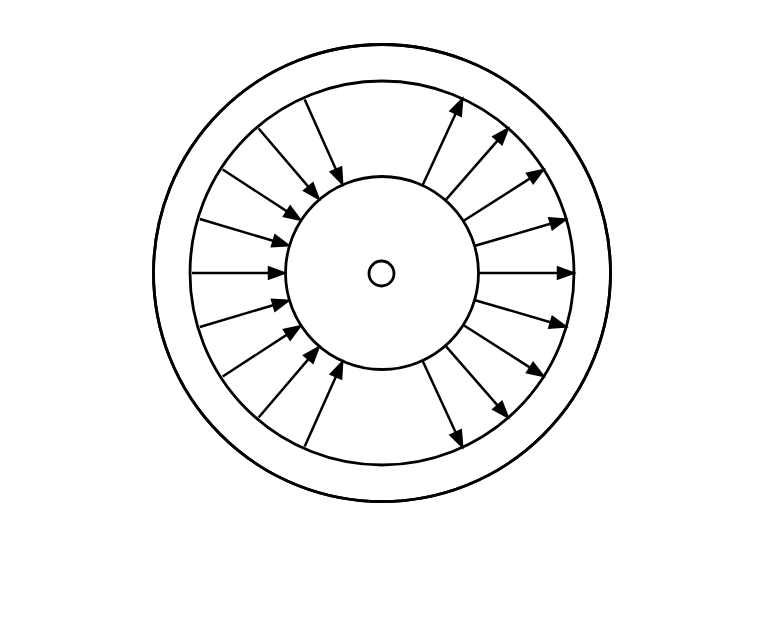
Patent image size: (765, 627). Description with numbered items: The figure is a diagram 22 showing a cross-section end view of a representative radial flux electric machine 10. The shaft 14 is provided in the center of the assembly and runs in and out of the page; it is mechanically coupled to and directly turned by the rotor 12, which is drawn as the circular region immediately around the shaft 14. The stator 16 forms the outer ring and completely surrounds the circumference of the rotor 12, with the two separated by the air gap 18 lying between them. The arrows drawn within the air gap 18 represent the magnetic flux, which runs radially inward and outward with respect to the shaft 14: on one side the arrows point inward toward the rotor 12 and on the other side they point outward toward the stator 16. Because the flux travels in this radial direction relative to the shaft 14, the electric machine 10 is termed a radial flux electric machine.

The radial flux electric machine 10 is at (150, 150).
The rotor 12 is at (396, 334).
The shaft 14 is at (378, 262).
The stator 16 is at (567, 175).
The air gap 18 is at (387, 137).
The diagram 22 is at (116, 470).